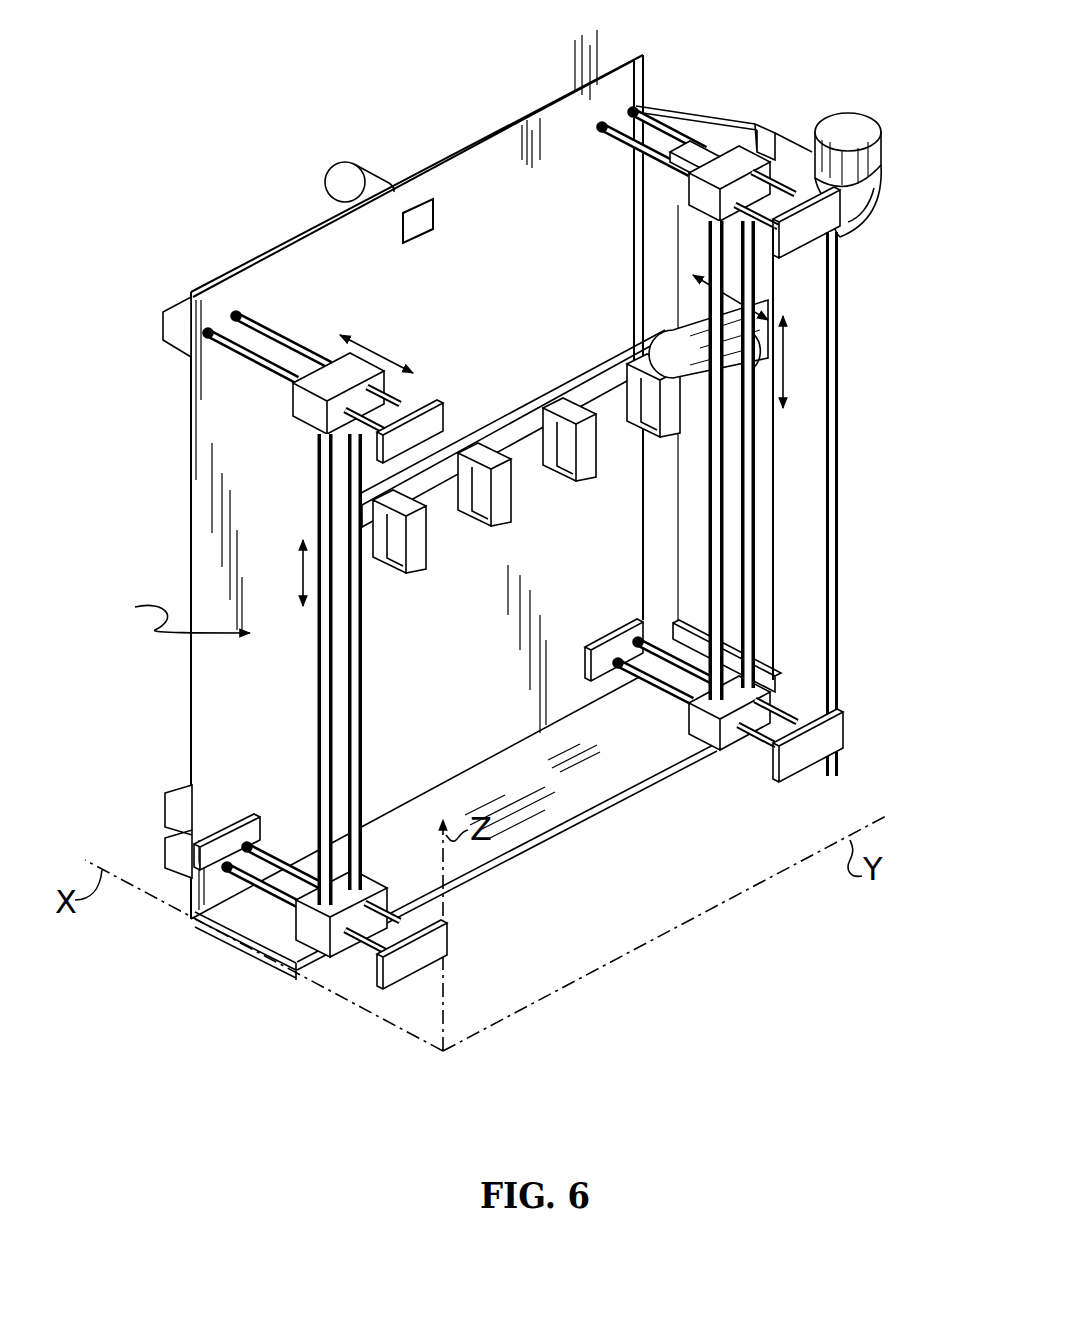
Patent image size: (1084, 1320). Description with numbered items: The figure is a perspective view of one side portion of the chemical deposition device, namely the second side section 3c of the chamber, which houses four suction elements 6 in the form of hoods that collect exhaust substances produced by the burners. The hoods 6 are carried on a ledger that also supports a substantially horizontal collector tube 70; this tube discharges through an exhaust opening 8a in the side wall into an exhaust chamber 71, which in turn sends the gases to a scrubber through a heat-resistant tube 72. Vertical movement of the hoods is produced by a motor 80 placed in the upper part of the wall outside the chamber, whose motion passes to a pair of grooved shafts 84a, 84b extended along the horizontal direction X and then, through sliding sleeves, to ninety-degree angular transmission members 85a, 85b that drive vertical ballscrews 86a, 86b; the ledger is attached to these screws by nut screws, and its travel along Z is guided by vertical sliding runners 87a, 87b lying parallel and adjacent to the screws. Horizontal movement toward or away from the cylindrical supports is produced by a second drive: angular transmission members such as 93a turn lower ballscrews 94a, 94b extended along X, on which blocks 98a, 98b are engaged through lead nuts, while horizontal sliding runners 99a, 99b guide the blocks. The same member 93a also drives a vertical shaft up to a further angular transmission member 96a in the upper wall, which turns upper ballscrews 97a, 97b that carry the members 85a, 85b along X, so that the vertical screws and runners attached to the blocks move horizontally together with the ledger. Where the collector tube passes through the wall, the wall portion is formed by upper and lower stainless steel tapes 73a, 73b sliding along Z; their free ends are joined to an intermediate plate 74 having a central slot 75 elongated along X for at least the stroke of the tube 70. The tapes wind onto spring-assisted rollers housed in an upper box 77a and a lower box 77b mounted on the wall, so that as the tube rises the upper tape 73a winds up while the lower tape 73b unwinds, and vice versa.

The motor 80 is at (347, 162).
The 90° angular transmission member 96a is at (185, 310).
The grooved shaft 84a is at (282, 338).
The ballscrew 97a is at (263, 360).
The 90° angular transmission member 85a is at (373, 362).
The vertical sliding runner 87a is at (317, 497).
The vertical ballscrew 86a is at (362, 690).
The block 98a is at (368, 890).
The ballscrew 94a is at (247, 892).
The 90° angular transmission member 93a is at (180, 795).
The horizontal sliding runner 99a is at (290, 855).
The second side section 3c is at (168, 612).
The collector tube 70 is at (532, 410).
The suction elements (hoods) 6 is at (410, 572).
The exhaust opening 8a is at (762, 350).
The central slot 75 is at (752, 360).
The intermediate plate 74 is at (803, 373).
The upper vertical tape 73a is at (771, 270).
The lower vertical tape 73b is at (770, 450).
The vertical ballscrew 86b is at (722, 557).
The vertical sliding runner 87b is at (750, 512).
The grooved shaft 84b is at (655, 165).
The ballscrew 97b is at (637, 116).
The upper box 77a is at (707, 143).
The 90° angular transmission member 85b is at (703, 203).
The exhaust chamber 71 is at (775, 145).
The heat-resistant tube 72 is at (862, 224).
The block 98b is at (703, 720).
The lower box 77b is at (773, 663).
The horizontal sliding runner 99b is at (750, 748).
The ballscrew 94b is at (789, 718).